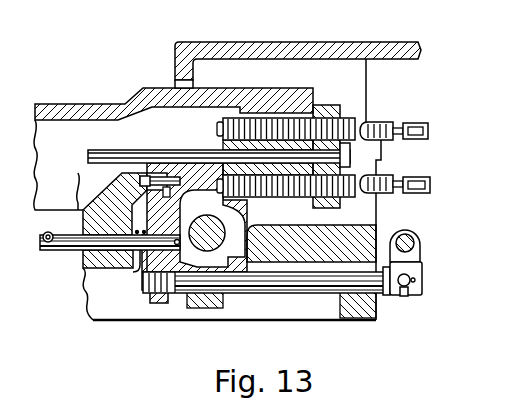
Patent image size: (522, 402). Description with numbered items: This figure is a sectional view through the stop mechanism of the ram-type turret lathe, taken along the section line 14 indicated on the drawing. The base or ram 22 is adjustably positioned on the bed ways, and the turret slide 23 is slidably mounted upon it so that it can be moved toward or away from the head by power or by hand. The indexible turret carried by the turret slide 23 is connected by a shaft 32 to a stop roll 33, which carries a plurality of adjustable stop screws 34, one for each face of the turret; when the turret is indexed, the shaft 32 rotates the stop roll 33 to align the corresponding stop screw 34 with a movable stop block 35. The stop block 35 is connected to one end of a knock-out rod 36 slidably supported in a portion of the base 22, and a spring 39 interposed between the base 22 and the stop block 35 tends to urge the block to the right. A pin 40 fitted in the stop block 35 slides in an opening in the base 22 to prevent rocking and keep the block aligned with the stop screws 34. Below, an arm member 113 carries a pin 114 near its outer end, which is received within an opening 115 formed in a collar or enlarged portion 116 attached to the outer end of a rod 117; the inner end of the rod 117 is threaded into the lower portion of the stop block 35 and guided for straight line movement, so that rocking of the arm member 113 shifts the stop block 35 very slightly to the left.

The section line 14 is at (236, 40).
The base or ram 22 is at (324, 43).
The turret slide 23 is at (88, 108).
The shaft 32 is at (178, 152).
The stop roll 33 is at (342, 105).
The stop screws 34 is at (410, 125).
The stop block 35 is at (150, 304).
The knock-out rod 36 is at (40, 240).
The spring 39 is at (140, 268).
The pin 40 is at (162, 176).
The arm member 113 is at (413, 234).
The pin 114 is at (410, 293).
The opening 115 is at (400, 296).
The collar or enlarged portion 116 is at (418, 282).
The rod 117 is at (308, 290).